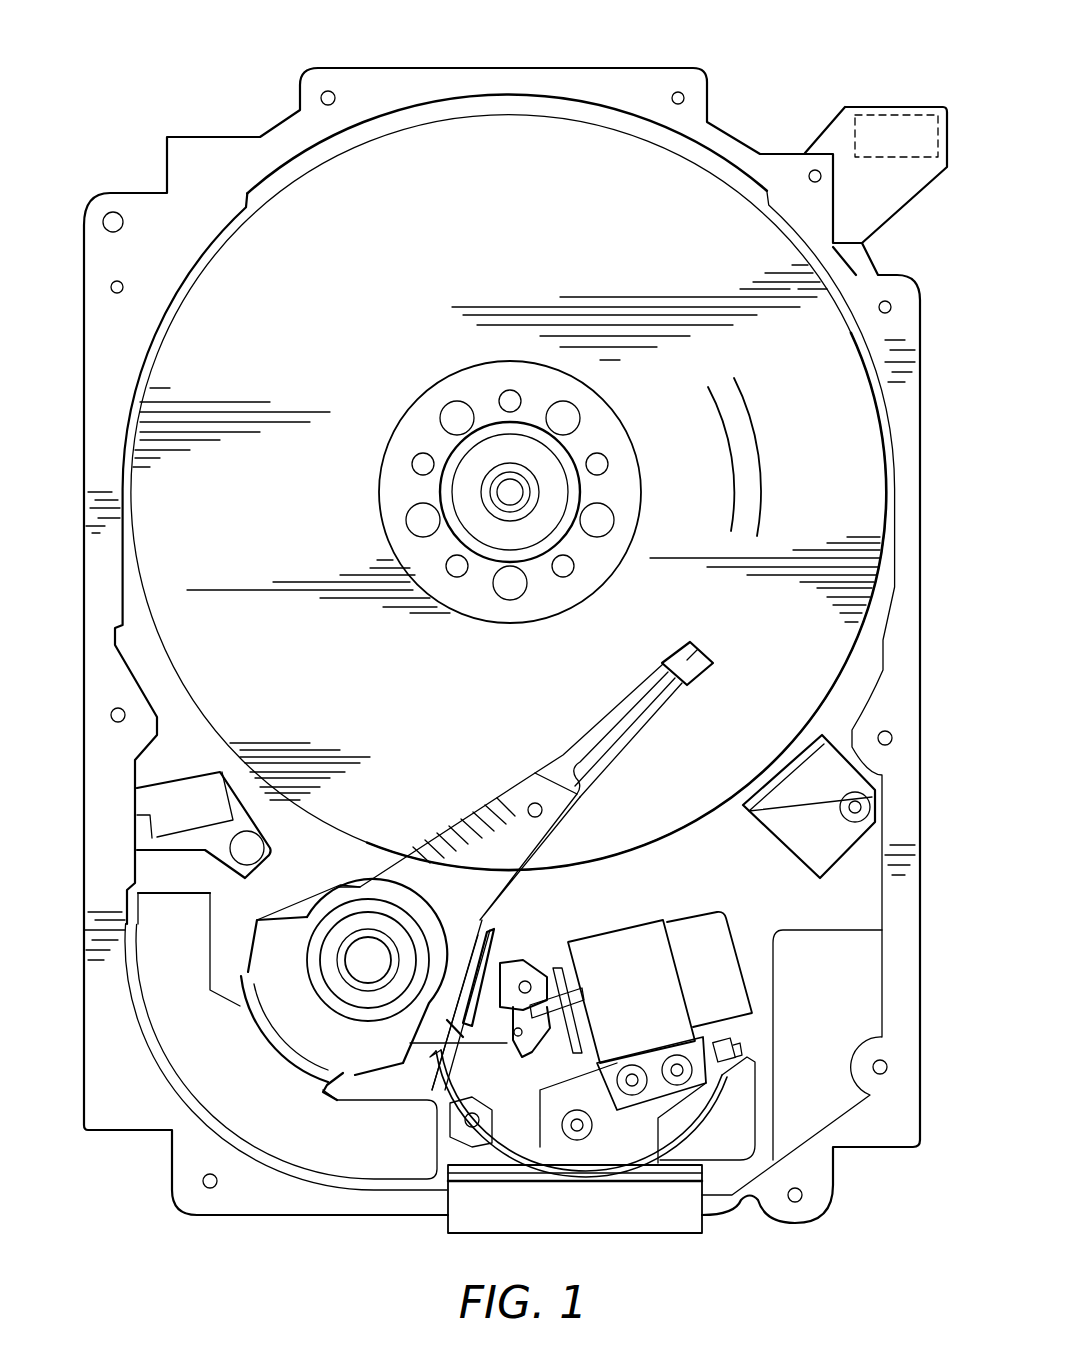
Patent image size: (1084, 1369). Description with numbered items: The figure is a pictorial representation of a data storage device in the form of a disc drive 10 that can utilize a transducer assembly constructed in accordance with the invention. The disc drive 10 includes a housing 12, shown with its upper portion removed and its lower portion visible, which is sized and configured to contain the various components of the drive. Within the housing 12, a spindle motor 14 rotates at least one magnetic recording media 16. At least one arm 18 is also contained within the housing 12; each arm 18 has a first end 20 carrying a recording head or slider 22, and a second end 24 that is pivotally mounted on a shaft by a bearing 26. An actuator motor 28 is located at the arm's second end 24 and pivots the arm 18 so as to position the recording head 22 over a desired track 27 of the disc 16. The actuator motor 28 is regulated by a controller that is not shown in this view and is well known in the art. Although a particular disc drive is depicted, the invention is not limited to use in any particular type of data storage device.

The disc drive 10 is at (143, 122).
The housing 12 is at (657, 85).
The spindle motor 14 is at (503, 498).
The magnetic recording media 16 is at (384, 264).
The arm 18 is at (493, 827).
The first end 20 is at (625, 698).
The recording head or slider 22 is at (699, 647).
The second end 24 is at (393, 893).
The bearing 26 is at (355, 950).
The track 27 is at (745, 465).
The actuator motor 28 is at (220, 1099).